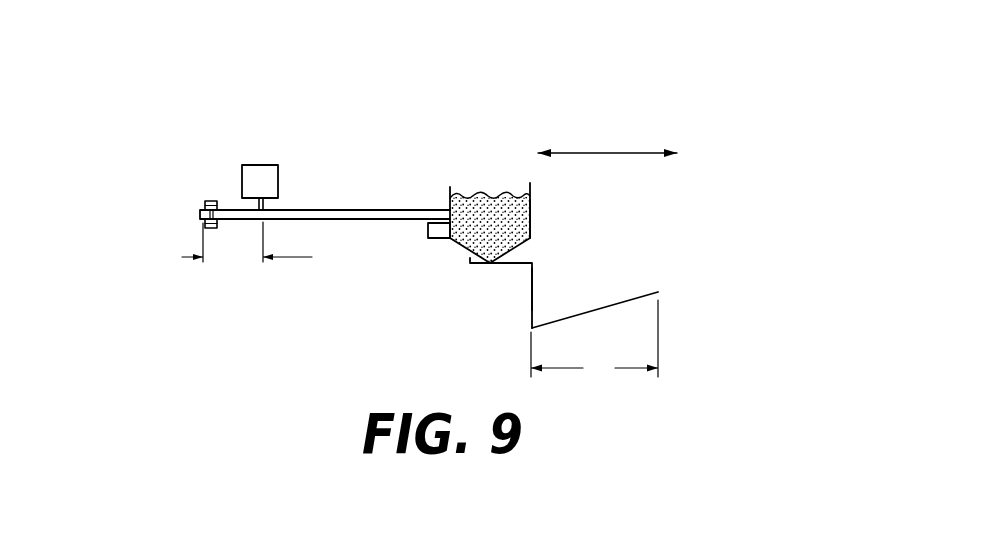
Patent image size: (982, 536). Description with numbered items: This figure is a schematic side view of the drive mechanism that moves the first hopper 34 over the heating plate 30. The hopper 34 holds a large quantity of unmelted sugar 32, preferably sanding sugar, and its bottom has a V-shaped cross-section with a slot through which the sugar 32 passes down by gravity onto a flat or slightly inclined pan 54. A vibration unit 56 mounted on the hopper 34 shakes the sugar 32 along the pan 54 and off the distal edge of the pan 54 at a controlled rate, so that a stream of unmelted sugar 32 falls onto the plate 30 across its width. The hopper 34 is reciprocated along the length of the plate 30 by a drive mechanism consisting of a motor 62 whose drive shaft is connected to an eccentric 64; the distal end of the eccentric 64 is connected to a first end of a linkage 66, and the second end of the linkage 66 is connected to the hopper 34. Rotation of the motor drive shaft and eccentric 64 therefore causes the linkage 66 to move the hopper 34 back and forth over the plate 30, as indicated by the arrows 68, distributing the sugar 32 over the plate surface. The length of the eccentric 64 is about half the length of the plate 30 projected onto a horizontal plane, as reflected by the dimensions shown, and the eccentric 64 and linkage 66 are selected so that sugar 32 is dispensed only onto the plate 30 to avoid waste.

The plate 30 is at (632, 298).
The unmelted sugar 32 is at (531, 222).
The first hopper 34 is at (530, 186).
The pan 54 is at (474, 264).
The vibration unit 56 is at (429, 238).
The motor 62 is at (273, 170).
The eccentric 64 is at (224, 209).
The linkage 66 is at (323, 219).
The arrows 68 is at (601, 153).